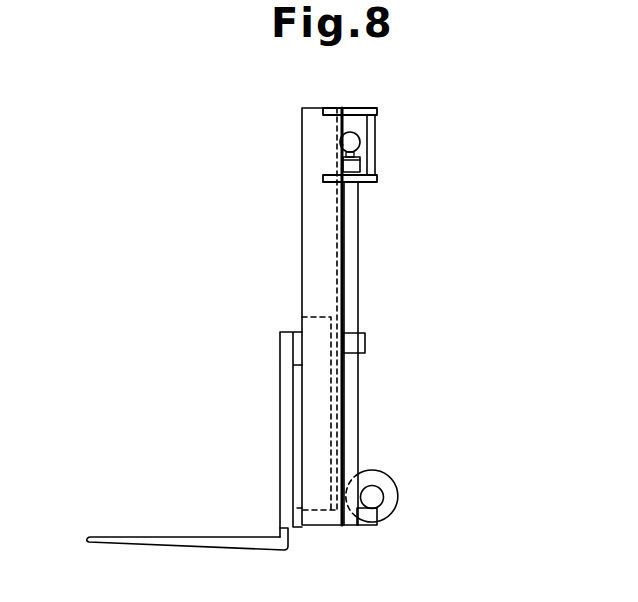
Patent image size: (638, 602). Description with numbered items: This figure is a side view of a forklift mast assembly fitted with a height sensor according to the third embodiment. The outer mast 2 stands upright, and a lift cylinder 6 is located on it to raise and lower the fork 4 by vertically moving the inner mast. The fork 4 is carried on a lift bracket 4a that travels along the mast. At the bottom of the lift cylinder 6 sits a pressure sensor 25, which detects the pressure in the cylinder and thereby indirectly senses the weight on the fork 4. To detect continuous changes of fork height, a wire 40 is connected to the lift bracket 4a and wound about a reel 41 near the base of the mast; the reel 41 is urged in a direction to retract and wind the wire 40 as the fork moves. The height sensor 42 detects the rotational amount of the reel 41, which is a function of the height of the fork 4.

The outer mast 2 is at (302, 182).
The fork 4 is at (192, 537).
The lift bracket 4a is at (308, 308).
The lift cylinder 6 is at (358, 233).
The pressure sensor 25 is at (374, 525).
The wire 40 is at (337, 243).
The reel 41 is at (384, 472).
The height sensor 42 is at (383, 511).